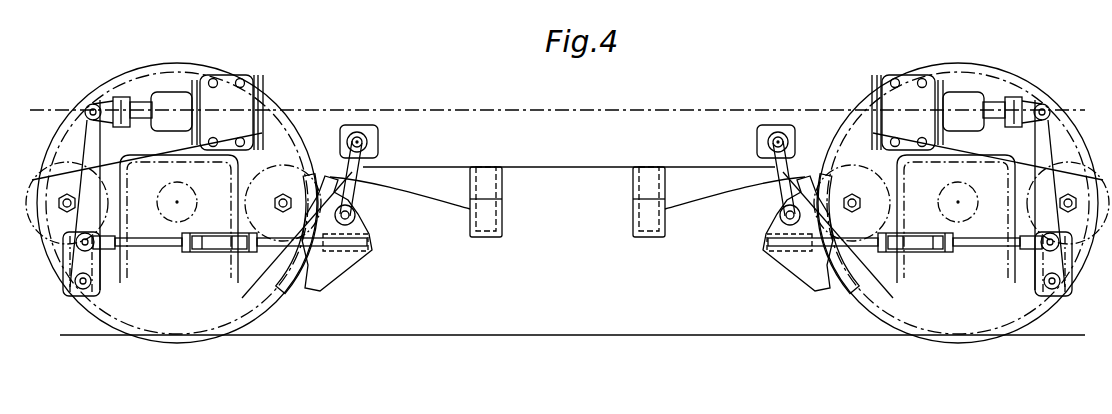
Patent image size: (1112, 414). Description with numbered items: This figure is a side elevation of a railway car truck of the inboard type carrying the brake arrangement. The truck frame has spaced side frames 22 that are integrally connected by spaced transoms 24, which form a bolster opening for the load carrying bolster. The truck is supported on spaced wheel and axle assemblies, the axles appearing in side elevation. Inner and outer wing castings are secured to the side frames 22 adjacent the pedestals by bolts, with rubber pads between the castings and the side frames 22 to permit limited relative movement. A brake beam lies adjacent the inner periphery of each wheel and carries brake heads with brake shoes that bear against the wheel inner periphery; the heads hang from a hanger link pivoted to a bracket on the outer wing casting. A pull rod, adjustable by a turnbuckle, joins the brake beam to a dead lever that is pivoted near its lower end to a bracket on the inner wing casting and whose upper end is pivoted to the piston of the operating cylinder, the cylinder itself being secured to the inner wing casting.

The side frames 22 is at (592, 115).
The transoms 24 is at (500, 184).